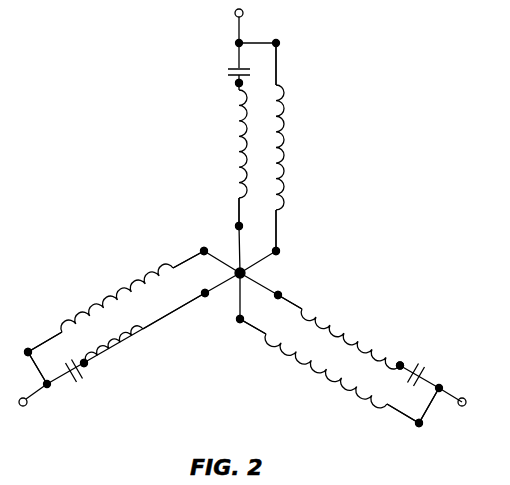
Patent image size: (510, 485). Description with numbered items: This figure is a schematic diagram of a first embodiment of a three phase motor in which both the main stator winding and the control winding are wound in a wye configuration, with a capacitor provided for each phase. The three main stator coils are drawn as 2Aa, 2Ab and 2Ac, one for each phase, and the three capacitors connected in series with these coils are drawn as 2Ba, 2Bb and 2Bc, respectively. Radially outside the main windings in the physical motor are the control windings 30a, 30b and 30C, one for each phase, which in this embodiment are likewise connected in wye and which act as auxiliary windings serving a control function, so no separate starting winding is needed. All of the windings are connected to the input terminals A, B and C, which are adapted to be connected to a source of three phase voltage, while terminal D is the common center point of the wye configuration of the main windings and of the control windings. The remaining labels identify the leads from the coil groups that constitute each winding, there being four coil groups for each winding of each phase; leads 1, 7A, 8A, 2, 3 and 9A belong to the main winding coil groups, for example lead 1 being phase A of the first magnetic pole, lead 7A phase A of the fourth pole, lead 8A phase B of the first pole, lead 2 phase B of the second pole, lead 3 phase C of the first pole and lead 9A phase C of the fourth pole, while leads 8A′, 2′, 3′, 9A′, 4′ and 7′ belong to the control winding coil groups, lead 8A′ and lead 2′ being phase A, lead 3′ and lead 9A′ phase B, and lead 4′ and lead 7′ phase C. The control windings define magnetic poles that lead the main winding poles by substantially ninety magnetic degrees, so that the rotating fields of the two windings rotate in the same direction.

The input terminal A is at (244, 14).
The input terminal B is at (458, 416).
The input terminal C is at (22, 412).
The center point D is at (256, 274).
The main winding coil group lead 1 is at (226, 89).
The main winding coil group lead 2 is at (402, 353).
The main winding coil group lead 3 is at (100, 366).
The control winding coil group lead 2′ is at (284, 236).
The control winding coil group lead 3′ is at (246, 339).
The control winding coil group lead 4′ is at (43, 328).
The control winding coil group lead 7′ is at (176, 251).
The main winding coil group lead 7A is at (230, 214).
The main winding coil group lead 8A is at (299, 297).
The control winding coil group lead 8A′ is at (285, 62).
The main winding coil group lead 9A is at (194, 305).
The control winding coil group lead 9A′ is at (398, 424).
The winding phase a 2Aa is at (238, 115).
The winding phase b 2Ab is at (346, 332).
The winding phase c 2Ac is at (149, 333).
The capacitor phase a 2Ba is at (222, 72).
The capacitor phase b 2Bb is at (414, 354).
The capacitor phase c 2Bc is at (80, 387).
The control winding 30a is at (283, 107).
The control winding 30b is at (312, 373).
The control winding 30C is at (136, 284).